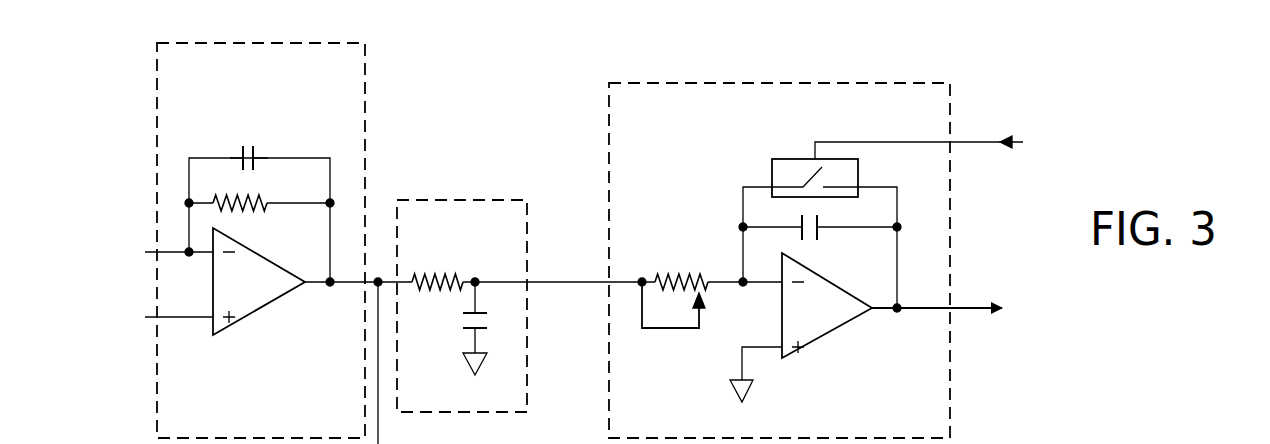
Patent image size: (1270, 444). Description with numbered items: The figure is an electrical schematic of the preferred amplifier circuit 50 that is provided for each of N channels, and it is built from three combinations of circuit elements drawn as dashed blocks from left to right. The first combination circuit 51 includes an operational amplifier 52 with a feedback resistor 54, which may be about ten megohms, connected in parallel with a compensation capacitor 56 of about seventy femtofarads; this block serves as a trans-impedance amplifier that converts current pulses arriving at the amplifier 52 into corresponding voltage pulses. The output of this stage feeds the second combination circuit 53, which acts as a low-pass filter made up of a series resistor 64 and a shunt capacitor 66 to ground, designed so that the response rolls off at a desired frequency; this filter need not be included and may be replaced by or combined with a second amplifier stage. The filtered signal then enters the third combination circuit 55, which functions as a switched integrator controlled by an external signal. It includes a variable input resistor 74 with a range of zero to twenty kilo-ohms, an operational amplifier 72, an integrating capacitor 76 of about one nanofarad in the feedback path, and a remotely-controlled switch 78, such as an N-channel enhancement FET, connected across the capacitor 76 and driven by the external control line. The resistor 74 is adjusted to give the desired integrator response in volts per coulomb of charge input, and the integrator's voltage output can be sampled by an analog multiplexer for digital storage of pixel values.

The circuit 50 is at (547, 62).
The first combination circuit 51 is at (155, 77).
The operational amplifier 52 is at (257, 313).
The second combination circuit 53 is at (470, 200).
The feedback resistor 54 is at (258, 210).
The third combination circuit 55 is at (870, 83).
The compensation capacitor 56 is at (253, 153).
The resistor 64 is at (415, 277).
The capacitor 66 is at (470, 330).
The operational amplifier 72 is at (822, 340).
The variable input resistor 74 is at (658, 277).
The capacitor 76 is at (818, 235).
The remotely-controlled switch 78 is at (793, 159).